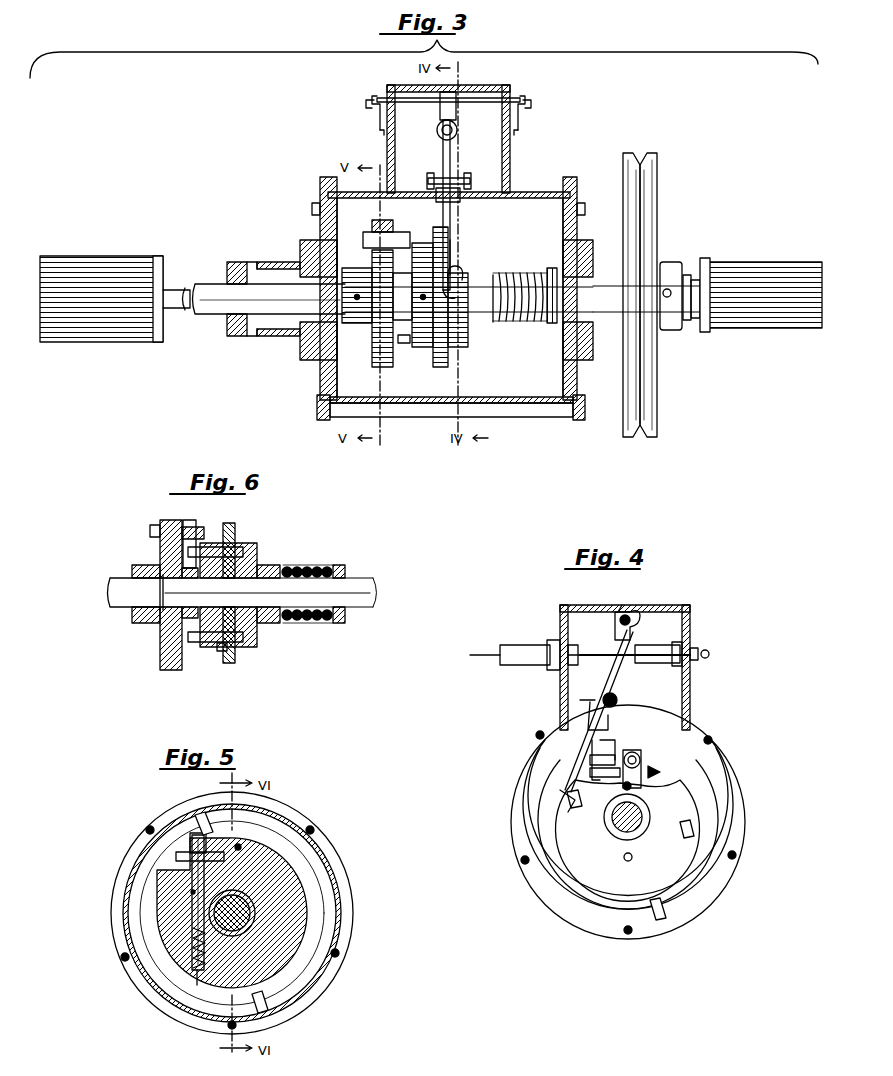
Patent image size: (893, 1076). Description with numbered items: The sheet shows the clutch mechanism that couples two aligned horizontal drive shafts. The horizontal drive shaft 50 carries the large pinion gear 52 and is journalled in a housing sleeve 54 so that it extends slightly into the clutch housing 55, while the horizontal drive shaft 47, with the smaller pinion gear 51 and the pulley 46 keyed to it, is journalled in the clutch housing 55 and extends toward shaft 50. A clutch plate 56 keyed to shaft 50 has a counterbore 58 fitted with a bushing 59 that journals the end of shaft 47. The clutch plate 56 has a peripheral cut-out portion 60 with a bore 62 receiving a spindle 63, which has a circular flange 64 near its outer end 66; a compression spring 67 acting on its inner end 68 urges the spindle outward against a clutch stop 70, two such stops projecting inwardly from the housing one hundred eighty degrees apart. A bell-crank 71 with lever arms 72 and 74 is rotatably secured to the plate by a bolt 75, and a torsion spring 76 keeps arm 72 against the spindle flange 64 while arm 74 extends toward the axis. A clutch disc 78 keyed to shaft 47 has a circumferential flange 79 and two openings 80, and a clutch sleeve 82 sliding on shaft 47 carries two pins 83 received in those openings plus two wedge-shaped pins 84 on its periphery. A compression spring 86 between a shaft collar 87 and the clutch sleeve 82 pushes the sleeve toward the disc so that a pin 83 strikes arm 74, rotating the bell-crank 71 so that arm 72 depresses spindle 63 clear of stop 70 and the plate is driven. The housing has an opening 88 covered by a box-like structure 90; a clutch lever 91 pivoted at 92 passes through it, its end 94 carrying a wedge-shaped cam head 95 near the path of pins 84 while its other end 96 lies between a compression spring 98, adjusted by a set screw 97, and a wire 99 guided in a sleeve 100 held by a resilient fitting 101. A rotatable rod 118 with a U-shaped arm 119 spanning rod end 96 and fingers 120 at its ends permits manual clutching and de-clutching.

In FIG. 3, the pulley 46 is at (648, 205).
In FIG. 3, the horizontal drive shaft member 47 is at (612, 290).
In FIG. 6, the horizontal drive shaft member 47 is at (362, 592).
In FIG. 5, the horizontal drive shaft member 47 is at (256, 918).
In FIG. 4, the horizontal drive shaft member 47 is at (618, 830).
In FIG. 3, the horizontal drive shaft member 50 is at (200, 284).
In FIG. 6, the horizontal drive shaft member 50 is at (118, 588).
In FIG. 3, the pinion gear 51 is at (752, 266).
In FIG. 3, the pinion gear 52 is at (68, 258).
In FIG. 3, the housing sleeve 54 is at (277, 335).
In FIG. 3, the clutch housing 55 is at (310, 345).
In FIG. 5, the clutch housing 55 is at (335, 870).
In FIG. 3, the clutch plate 56 is at (372, 356).
In FIG. 6, the clutch plate 56 is at (140, 560).
In FIG. 5, the clutch plate 56 is at (298, 910).
In FIG. 4, the clutch plate 56 is at (700, 810).
In FIG. 6, the counterbore 58 is at (162, 620).
In FIG. 5, the counterbore 58 is at (285, 950).
In FIG. 3, the bushing 59 is at (402, 296).
In FIG. 6, the bushing 59 is at (182, 612).
In FIG. 5, the bushing 59 is at (258, 920).
In FIG. 5, the peripheral cut-out portion 60 is at (232, 858).
In FIG. 5, the bore 62 is at (192, 892).
In FIG. 5, the spindle 63 is at (200, 915).
In FIG. 5, the circular flange 64 is at (178, 857).
In FIG. 4, the circular flange 64 is at (590, 770).
In FIG. 5, the outer end 66 is at (190, 845).
In FIG. 5, the compression spring 67 is at (200, 948).
In FIG. 5, the inner end 68 is at (195, 928).
In FIG. 5, the clutch stop 70 is at (195, 818).
In FIG. 4, the clutch stop 70 is at (670, 908).
In FIG. 6, the bell-crank 71 is at (182, 520).
In FIG. 4, the bell-crank 71 is at (646, 772).
In FIG. 4, the lever arm 72 is at (590, 760).
In FIG. 4, the lever arm 74 is at (652, 770).
In FIG. 6, the bolt 75 is at (152, 528).
In FIG. 4, the bolt 75 is at (650, 760).
In FIG. 6, the torsion spring 76 is at (196, 530).
In FIG. 4, the torsion spring 76 is at (642, 752).
In FIG. 3, the clutch disc 78 is at (386, 368).
In FIG. 6, the clutch disc 78 is at (235, 545).
In FIG. 6, the circumferential flange 79 is at (232, 525).
In FIG. 4, the circumferential flange 79 is at (598, 870).
In FIG. 6, the openings 80 is at (213, 647).
In FIG. 3, the clutch sleeve 82 is at (427, 348).
In FIG. 6, the clutch sleeve 82 is at (272, 620).
In FIG. 4, the clutch sleeve 82 is at (660, 845).
In FIG. 3, the pins 83 is at (405, 347).
In FIG. 6, the pins 83 is at (222, 650).
In FIG. 4, the pins 83 is at (626, 862).
In FIG. 3, the wedge-shaped pins 84 is at (467, 282).
In FIG. 4, the wedge-shaped pins 84 is at (568, 810).
In FIG. 3, the compression spring 86 is at (536, 320).
In FIG. 6, the compression spring 86 is at (305, 567).
In FIG. 3, the shaft collar 87 is at (580, 255).
In FIG. 6, the shaft collar 87 is at (342, 566).
In FIG. 3, the opening 88 is at (460, 193).
In FIG. 4, the opening 88 is at (660, 718).
In FIG. 3, the box-like structure 90 is at (510, 88).
In FIG. 4, the box-like structure 90 is at (690, 607).
In FIG. 3, the clutch lever 91 is at (450, 218).
In FIG. 4, the clutch lever 91 is at (600, 698).
In FIG. 3, the pivot 92 is at (470, 178).
In FIG. 4, the pivot 92 is at (580, 712).
In FIG. 3, the rod end 94 is at (452, 245).
In FIG. 4, the rod end 94 is at (570, 775).
In FIG. 3, the wedge-shaped cam head 95 is at (462, 275).
In FIG. 4, the wedge-shaped cam head 95 is at (572, 798).
In FIG. 3, the rod end 96 is at (440, 152).
In FIG. 4, the rod end 96 is at (610, 668).
In FIG. 4, the set screw 97 is at (708, 652).
In FIG. 4, the compression spring 98 is at (635, 650).
In FIG. 4, the wire 99 is at (593, 652).
In FIG. 4, the sleeve 100 is at (522, 652).
In FIG. 4, the resilient fitting 101 is at (550, 645).
In FIG. 3, the rotatable rod 118 is at (405, 96).
In FIG. 4, the rotatable rod 118 is at (627, 612).
In FIG. 3, the U-shaped arm 119 is at (440, 96).
In FIG. 4, the U-shaped arm 119 is at (622, 608).
In FIG. 3, the fingers 120 is at (378, 114).